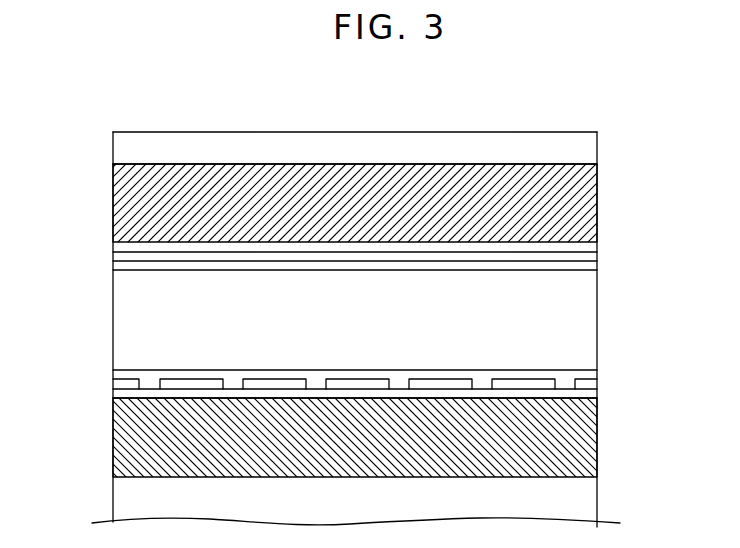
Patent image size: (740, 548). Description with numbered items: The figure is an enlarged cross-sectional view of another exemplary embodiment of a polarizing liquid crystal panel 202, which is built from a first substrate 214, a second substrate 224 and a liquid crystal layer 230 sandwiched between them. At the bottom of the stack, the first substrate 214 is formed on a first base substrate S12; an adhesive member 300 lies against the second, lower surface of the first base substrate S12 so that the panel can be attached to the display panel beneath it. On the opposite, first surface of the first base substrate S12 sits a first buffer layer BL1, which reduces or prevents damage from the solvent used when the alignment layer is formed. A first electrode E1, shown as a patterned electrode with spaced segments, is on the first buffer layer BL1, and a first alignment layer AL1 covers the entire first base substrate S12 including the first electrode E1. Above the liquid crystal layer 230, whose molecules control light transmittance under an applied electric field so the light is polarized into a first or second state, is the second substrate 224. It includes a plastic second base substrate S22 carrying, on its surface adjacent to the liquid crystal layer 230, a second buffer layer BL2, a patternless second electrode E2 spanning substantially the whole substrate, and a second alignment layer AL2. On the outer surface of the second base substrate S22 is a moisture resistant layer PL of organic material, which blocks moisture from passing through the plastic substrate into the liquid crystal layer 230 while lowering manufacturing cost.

The polarizing liquid crystal panel 202 is at (553, 119).
The moisture resistant layer PL is at (597, 143).
The second substrate 224 is at (664, 182).
The second base substrate S22 is at (597, 188).
The second buffer layer BL2 is at (597, 246).
The second electrode E2 is at (597, 258).
The second alignment layer AL2 is at (597, 268).
The liquid crystal layer 230 is at (597, 313).
The first substrate 214 is at (664, 348).
The first alignment layer AL1 is at (597, 372).
The first electrode E1 is at (597, 380).
The first buffer layer BL1 is at (597, 394).
The first base substrate S12 is at (597, 435).
The adhesive member 300 is at (117, 500).